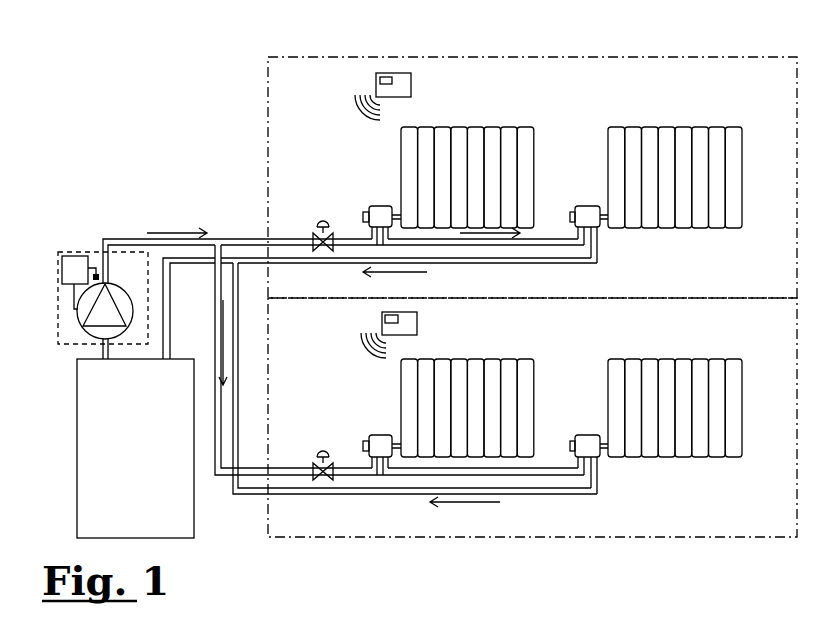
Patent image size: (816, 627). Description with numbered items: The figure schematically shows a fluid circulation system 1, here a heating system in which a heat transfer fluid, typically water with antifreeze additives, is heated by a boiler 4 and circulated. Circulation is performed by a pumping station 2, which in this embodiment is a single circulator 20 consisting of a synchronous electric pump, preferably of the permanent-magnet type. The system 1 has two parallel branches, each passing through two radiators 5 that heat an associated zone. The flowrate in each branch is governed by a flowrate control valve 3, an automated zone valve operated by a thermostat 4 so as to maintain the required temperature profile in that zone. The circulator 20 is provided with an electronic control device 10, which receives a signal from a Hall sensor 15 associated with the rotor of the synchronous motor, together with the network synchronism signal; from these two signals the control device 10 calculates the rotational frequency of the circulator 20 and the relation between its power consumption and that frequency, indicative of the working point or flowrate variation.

The fluid circulation system 1 is at (137, 162).
The pumping station 2 is at (58, 278).
The flowrate control valve 3 is at (318, 217).
The boiler / thermostat 4 is at (102, 422).
The radiator 5 is at (523, 152).
The electronic control device 10 is at (67, 268).
The Hall sensor 15 is at (94, 262).
The circulator 20 is at (102, 315).